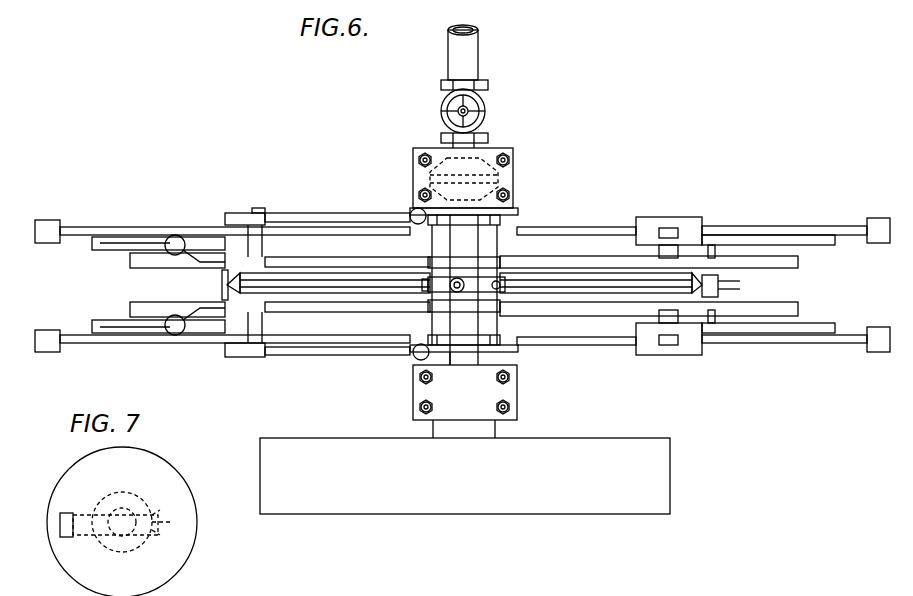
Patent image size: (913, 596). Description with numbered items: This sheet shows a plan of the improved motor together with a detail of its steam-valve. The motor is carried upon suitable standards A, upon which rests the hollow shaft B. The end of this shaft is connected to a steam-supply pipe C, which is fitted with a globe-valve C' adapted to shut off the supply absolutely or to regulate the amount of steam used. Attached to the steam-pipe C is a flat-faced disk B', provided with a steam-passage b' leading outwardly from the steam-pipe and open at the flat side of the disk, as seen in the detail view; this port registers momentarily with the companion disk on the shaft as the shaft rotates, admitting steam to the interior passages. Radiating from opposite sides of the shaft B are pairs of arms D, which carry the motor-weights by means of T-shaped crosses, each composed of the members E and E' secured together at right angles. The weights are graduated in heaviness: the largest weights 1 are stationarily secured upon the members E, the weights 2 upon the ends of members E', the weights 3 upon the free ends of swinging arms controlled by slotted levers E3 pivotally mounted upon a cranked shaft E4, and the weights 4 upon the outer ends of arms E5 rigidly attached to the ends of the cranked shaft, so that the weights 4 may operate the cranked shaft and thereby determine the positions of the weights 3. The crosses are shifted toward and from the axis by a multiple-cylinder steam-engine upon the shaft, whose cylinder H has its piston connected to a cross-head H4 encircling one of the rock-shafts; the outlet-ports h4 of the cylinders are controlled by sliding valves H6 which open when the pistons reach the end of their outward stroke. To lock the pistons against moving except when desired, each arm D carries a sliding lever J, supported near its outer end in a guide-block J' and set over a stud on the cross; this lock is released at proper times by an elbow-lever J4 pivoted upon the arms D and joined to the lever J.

In FIG. 6, the steam-supply pipe C is at (472, 57).
In FIG. 7, the steam-supply pipe C is at (166, 528).
In FIG. 6, the globe-valve C' is at (485, 118).
In FIG. 6, the standards A is at (513, 172).
In FIG. 6, the flat-faced disk B' is at (493, 179).
In FIG. 7, the flat-faced disk B' is at (122, 510).
In FIG. 6, the hollow shaft B is at (467, 290).
In FIG. 6, the elbow-lever J4 is at (415, 209).
In FIG. 6, the weights 4 is at (419, 284).
In FIG. 6, the cylinder H is at (483, 270).
In FIG. 6, the sliding valves H6 is at (478, 292).
In FIG. 6, the outlet-ports h4 is at (455, 292).
In FIG. 6, the cross-head H4 is at (218, 285).
In FIG. 6, the cross member E' is at (463, 286).
In FIG. 6, the cross member E is at (664, 290).
In FIG. 6, the slotted levers E3 is at (120, 237).
In FIG. 6, the cranked shaft E4 is at (212, 283).
In FIG. 6, the arms E5 is at (310, 213).
In FIG. 6, the weights 2 is at (462, 285).
In FIG. 6, the weights 3 is at (178, 235).
In FIG. 6, the weights 1 is at (669, 286).
In FIG. 6, the sliding lever J is at (231, 284).
In FIG. 6, the guide-block J' is at (347, 284).
In FIG. 6, the arms D is at (355, 257).
In FIG. 7, the steam-passage b' is at (109, 512).